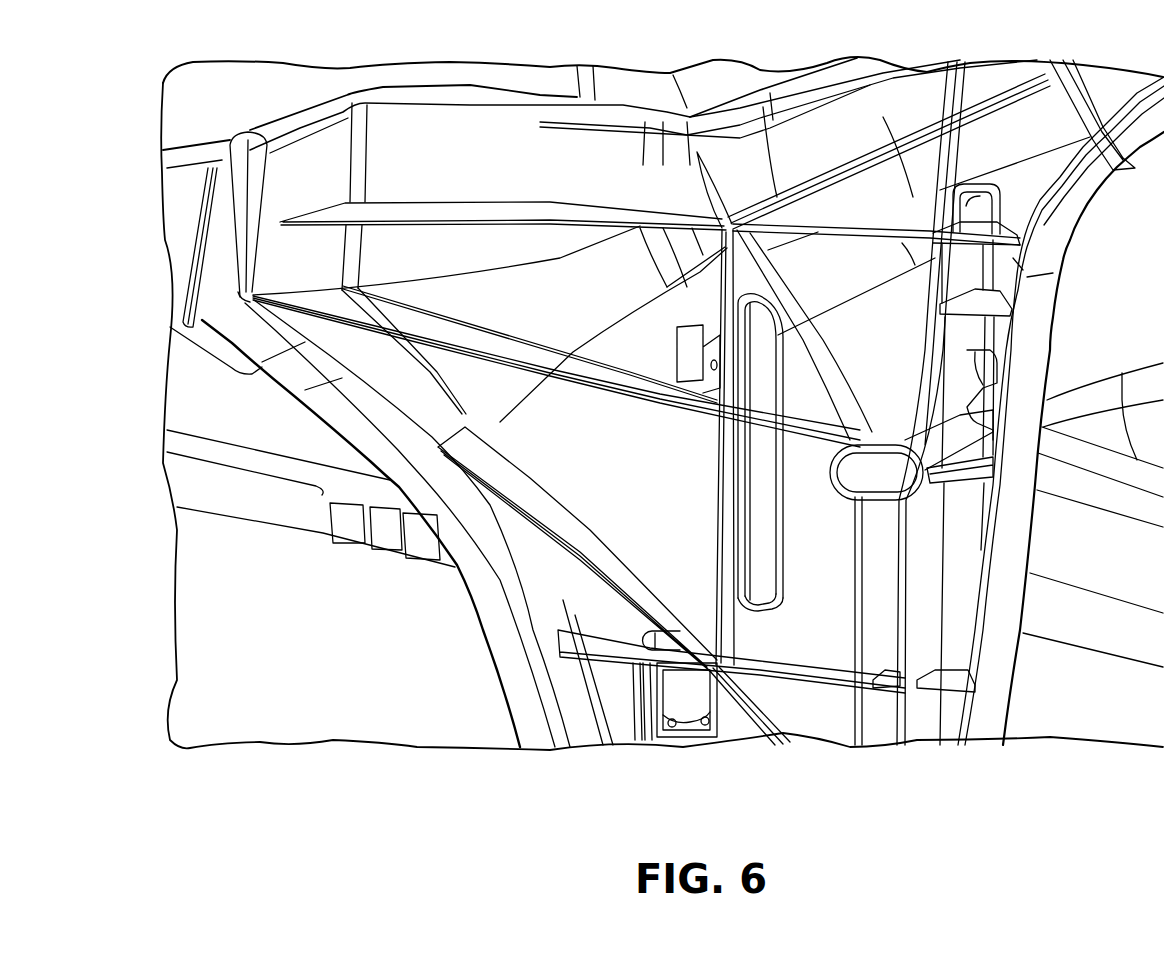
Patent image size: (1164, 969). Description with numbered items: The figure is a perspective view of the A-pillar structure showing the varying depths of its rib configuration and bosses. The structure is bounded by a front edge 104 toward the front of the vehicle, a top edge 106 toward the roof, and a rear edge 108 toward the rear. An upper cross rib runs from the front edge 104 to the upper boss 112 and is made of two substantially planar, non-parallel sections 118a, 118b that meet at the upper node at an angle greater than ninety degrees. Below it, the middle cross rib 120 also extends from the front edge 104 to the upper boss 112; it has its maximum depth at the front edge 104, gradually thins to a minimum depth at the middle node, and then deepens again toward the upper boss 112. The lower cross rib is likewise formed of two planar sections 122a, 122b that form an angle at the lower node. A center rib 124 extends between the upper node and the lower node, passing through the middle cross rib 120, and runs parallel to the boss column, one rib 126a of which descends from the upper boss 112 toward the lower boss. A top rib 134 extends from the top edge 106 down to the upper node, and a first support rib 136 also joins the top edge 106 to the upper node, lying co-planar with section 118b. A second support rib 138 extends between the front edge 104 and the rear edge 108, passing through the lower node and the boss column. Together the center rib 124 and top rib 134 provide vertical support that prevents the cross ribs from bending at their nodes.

The front edge 104 is at (510, 588).
The top edge 106 is at (807, 108).
The rear edge 108 is at (1027, 343).
The upper boss 112 is at (845, 477).
The section of upper cross rib 118a is at (460, 208).
The section of upper cross rib 118b is at (823, 353).
The middle cross rib 120 is at (418, 330).
The section of lower cross rib 122a is at (503, 477).
The section of lower cross rib 122b is at (757, 707).
The center rib 124 is at (735, 484).
The boss column 126a is at (920, 625).
The top rib 134 is at (868, 163).
The first support rib 136 is at (736, 203).
The second support rib 138 is at (808, 662).